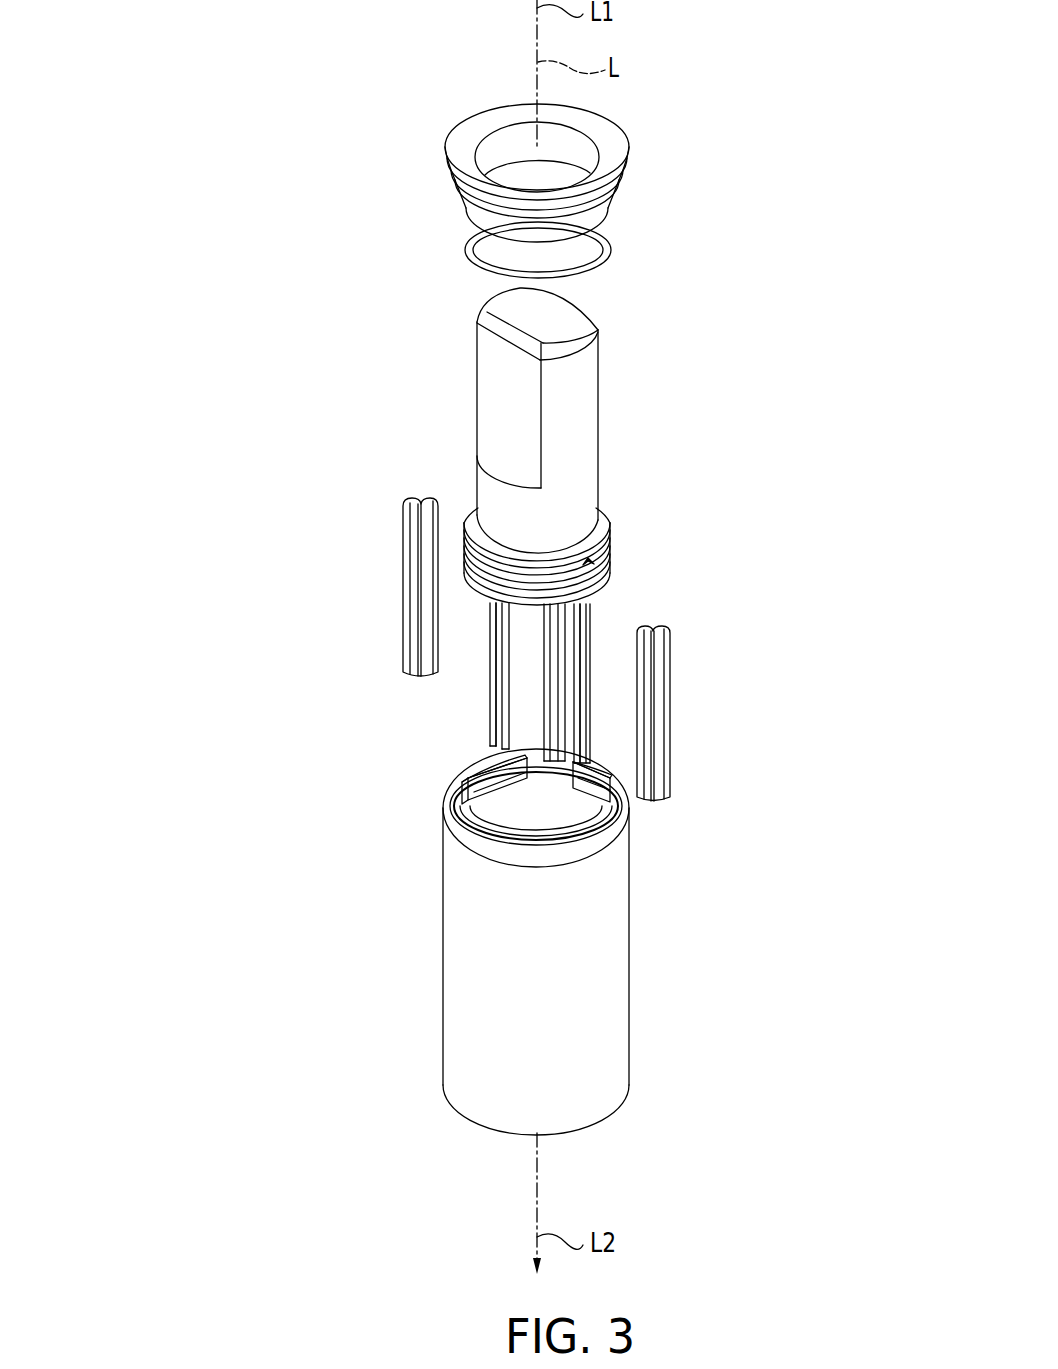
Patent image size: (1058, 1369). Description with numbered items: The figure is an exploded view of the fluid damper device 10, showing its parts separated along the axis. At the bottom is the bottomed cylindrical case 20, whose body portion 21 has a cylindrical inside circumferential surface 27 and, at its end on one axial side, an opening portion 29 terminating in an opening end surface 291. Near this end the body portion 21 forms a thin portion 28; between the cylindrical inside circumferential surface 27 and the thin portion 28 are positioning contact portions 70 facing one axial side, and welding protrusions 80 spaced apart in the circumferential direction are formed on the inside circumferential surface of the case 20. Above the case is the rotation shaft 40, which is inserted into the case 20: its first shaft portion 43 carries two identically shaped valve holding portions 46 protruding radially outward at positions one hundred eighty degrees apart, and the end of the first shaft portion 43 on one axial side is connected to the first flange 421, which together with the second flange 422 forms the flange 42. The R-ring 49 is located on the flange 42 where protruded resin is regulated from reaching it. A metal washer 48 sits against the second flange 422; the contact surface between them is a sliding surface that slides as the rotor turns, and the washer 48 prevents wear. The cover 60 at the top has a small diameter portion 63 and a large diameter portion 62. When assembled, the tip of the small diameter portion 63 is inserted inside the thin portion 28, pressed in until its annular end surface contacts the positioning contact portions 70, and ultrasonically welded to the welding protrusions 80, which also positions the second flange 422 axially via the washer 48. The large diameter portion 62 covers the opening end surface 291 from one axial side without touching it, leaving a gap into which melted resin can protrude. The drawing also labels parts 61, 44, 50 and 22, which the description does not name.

The fluid damper device 10 is at (250, 170).
The cover 60 is at (514, 153).
The opening 61 is at (497, 143).
The large diameter portion 62 is at (607, 138).
The small diameter portion 63 is at (612, 208).
The washer 48 is at (452, 240).
The rotation shaft 40 is at (507, 525).
The piston body side surface 44 is at (590, 417).
The flange 42 is at (541, 529).
The second flange 422 is at (607, 515).
The R-ring 49 is at (591, 562).
The first flange 421 is at (603, 587).
The first shaft portion 43 is at (518, 667).
The valve holding portions 46 is at (492, 633).
The rod members 50 is at (390, 576).
The case 20 is at (515, 932).
The body portion 21 is at (457, 1023).
The casing bottom 22 is at (490, 1110).
The cylindrical inside circumferential surface 27 is at (548, 813).
The thin portion 28 is at (620, 818).
The opening portion 29 is at (456, 830).
The opening end surface 291 is at (602, 827).
The positioning contact portions 70 is at (580, 762).
The welding protrusions 80 is at (488, 777).